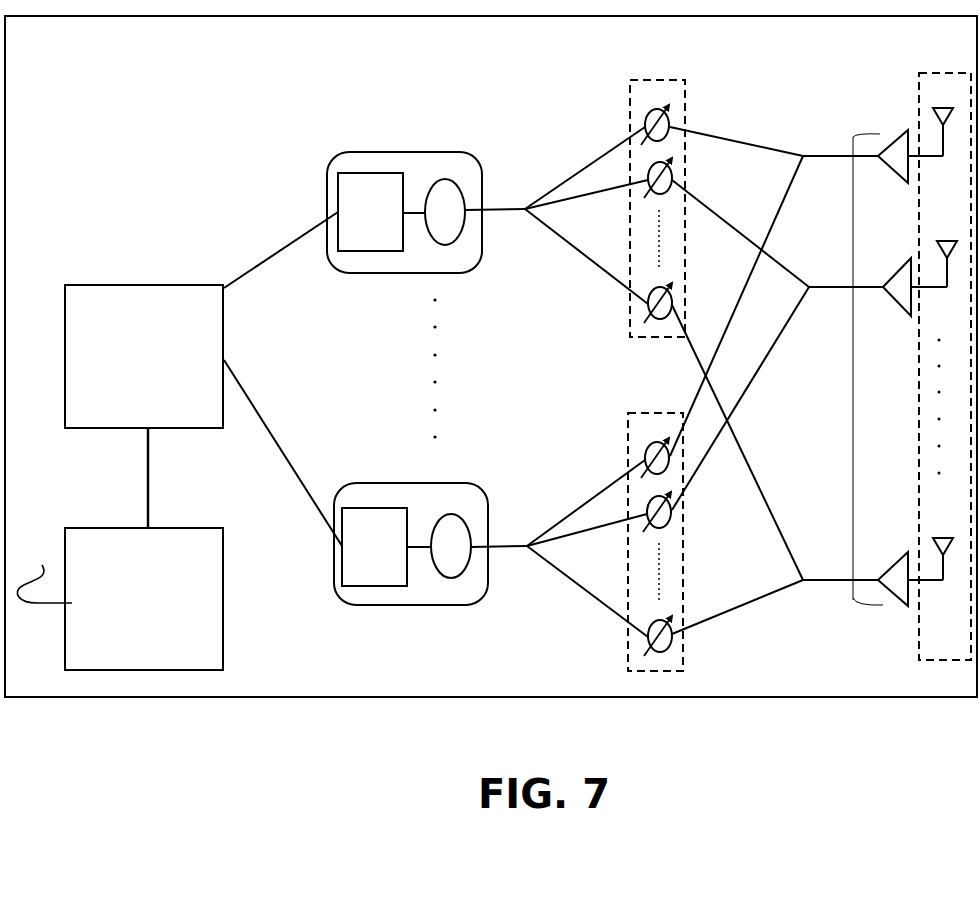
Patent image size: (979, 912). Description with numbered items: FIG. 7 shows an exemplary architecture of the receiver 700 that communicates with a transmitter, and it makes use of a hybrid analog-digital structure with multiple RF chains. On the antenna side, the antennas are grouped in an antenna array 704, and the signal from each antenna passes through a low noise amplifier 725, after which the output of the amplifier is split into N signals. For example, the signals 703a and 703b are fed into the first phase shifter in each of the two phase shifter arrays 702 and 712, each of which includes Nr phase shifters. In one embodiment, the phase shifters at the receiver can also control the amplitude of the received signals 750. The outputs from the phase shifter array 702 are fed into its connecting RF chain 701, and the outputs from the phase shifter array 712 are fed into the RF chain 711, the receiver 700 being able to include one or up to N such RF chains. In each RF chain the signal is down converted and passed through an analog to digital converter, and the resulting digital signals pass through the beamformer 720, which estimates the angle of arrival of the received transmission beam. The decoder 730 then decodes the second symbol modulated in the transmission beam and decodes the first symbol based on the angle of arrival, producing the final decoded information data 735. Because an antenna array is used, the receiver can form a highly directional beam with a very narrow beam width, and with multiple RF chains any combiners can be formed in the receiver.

The receiver 700 is at (152, 18).
The RF chain 701 is at (403, 152).
The phase shifter array 702 is at (629, 102).
The signal 703a is at (735, 141).
The signal 703b is at (783, 200).
The antenna array 704 is at (938, 75).
The RF chain 711 is at (376, 483).
The phase shifter array 712 is at (627, 437).
The beamformer 720 is at (128, 285).
The low noise amplifier 725 is at (853, 137).
The decoder 730 is at (190, 528).
The decoded information data 735 is at (40, 573).
The received signals 750 is at (853, 362).